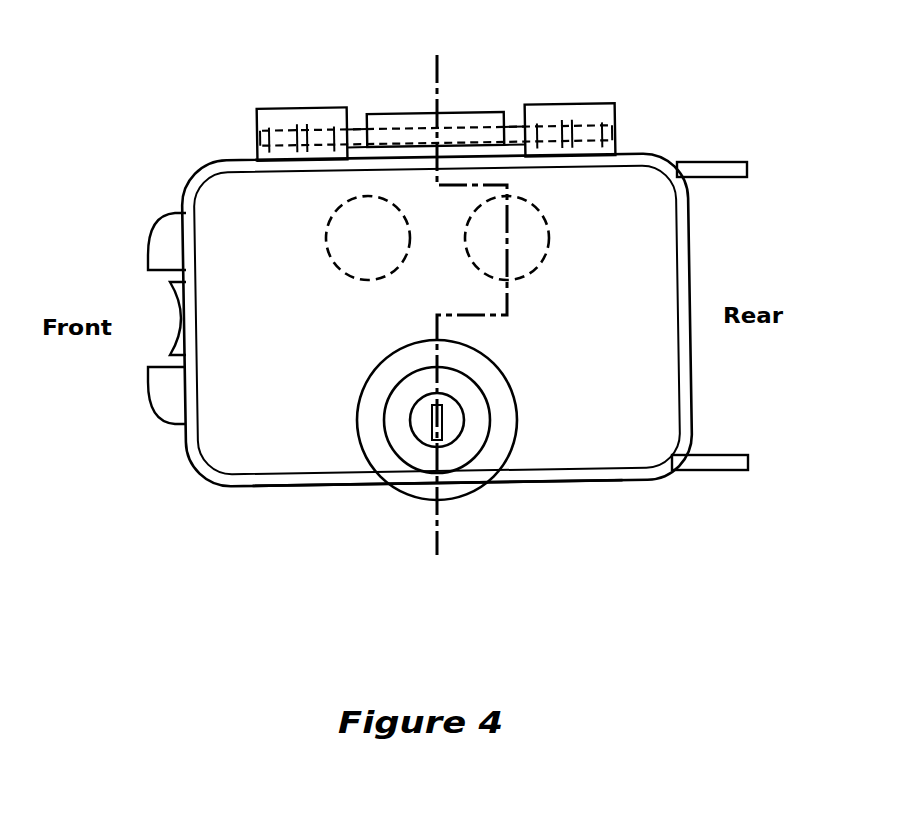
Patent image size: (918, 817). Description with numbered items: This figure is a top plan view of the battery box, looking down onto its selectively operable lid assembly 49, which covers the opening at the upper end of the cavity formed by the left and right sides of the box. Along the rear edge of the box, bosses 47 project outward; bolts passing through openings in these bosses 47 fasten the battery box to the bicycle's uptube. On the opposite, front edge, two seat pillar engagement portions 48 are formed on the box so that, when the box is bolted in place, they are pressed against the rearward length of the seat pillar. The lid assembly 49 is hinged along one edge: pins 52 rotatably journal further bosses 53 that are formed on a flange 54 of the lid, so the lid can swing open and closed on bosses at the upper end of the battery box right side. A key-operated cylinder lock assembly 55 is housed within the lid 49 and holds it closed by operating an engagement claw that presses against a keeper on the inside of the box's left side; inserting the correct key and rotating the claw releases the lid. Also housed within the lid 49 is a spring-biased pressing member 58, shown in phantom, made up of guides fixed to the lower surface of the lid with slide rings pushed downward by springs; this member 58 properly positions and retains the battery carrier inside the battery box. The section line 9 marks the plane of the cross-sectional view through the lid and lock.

The section line 9- 9 is at (420, 70).
The bosses 47 is at (718, 162).
The seat pillar engagement portions 48 is at (158, 242).
The selectively operable lid assembly 49 is at (722, 256).
The pins 52 is at (562, 127).
The bosses 53 is at (273, 106).
The flange 54 is at (525, 485).
The cylinder lock assembly 55 is at (510, 413).
The spring-biased pressing member 58 is at (322, 251).